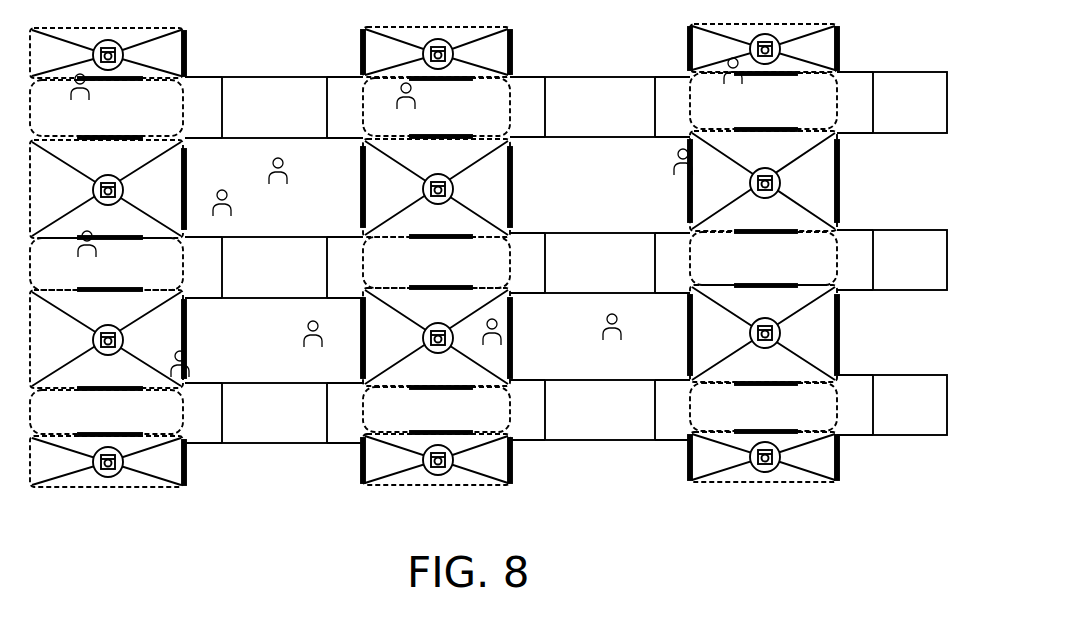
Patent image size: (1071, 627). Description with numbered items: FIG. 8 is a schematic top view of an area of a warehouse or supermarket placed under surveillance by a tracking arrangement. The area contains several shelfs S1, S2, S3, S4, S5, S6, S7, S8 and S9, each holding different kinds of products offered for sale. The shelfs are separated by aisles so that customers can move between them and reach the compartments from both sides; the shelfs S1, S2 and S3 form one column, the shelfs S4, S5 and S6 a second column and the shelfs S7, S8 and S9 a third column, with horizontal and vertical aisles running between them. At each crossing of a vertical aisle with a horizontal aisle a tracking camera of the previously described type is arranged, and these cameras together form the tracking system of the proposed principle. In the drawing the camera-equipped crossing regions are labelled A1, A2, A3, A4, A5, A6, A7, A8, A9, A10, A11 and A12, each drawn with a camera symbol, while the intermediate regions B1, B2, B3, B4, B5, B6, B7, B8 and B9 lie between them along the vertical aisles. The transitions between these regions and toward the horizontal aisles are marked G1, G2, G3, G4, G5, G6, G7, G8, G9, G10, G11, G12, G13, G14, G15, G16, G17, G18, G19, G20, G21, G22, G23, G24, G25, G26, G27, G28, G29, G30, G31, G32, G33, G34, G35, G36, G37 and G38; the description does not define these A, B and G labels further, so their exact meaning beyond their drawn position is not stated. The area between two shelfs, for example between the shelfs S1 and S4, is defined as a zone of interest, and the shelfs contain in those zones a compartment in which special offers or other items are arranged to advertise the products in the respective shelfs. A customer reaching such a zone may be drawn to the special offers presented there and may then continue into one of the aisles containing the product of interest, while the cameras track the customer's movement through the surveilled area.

The first area (camera-monitored room) A1 is at (106, 53).
The first area (camera-monitored room) A2 is at (106, 189).
The first area (camera-monitored room) A3 is at (106, 339).
The first area (camera-monitored room) A4 is at (106, 461).
The first area (camera-monitored room) A5 is at (436, 52).
The first area (camera-monitored room) A6 is at (436, 188).
The first area (camera-monitored room) A7 is at (436, 337).
The first area (camera-monitored room) A8 is at (436, 459).
The first area (camera-monitored room) A9 is at (763, 48).
The first area (camera-monitored room) A10 is at (763, 181).
The first area (camera-monitored room) A11 is at (763, 333).
The first area (camera-monitored room) A12 is at (763, 457).
The second area (buffer room) B1 is at (106, 108).
The second area (buffer room) B2 is at (106, 264).
The second area (buffer room) B3 is at (106, 412).
The second area (buffer room) B4 is at (436, 107).
The second area (buffer room) B5 is at (436, 262).
The second area (buffer room) B6 is at (436, 409).
The second area (buffer room) B7 is at (763, 101).
The second area (buffer room) B8 is at (763, 258).
The second area (buffer room) B9 is at (763, 407).
The shelf S1 is at (274, 107).
The shelf S2 is at (274, 267).
The shelf S3 is at (274, 413).
The shelf S4 is at (600, 107).
The shelf S5 is at (600, 263).
The shelf S6 is at (600, 410).
The shelf S7 is at (910, 102).
The shelf S8 is at (910, 260).
The shelf S9 is at (910, 405).
The gate G1 is at (187, 56).
The gate G2 is at (135, 82).
The gate G3 is at (135, 141).
The gate G4 is at (187, 178).
The gate G5 is at (135, 241).
The gate G6 is at (135, 292).
The gate G7 is at (187, 330).
The gate G8 is at (135, 392).
The gate G9 is at (92, 434).
The gate G10 is at (186, 462).
The gate G11 is at (362, 56).
The gate G12 is at (513, 55).
The gate G13 is at (455, 81).
The gate G14 is at (410, 136).
The gate G15 is at (513, 182).
The gate G16 is at (470, 236).
The gate G17 is at (362, 215).
The gate G18 is at (410, 287).
The gate G19 is at (513, 335).
The gate G20 is at (460, 388).
The gate G21 is at (362, 348).
The gate G22 is at (410, 434).
The gate G23 is at (513, 466).
The gate G24 is at (362, 462).
The gate G25 is at (688, 52).
The gate G26 is at (840, 52).
The gate G27 is at (788, 75).
The gate G28 is at (738, 130).
The gate G29 is at (840, 176).
The gate G30 is at (795, 229).
The gate G31 is at (688, 186).
The gate G32 is at (795, 288).
The gate G33 is at (840, 350).
The gate G34 is at (780, 387).
The gate G35 is at (688, 352).
The gate G36 is at (738, 431).
The gate G37 is at (840, 468).
The gate G38 is at (688, 462).